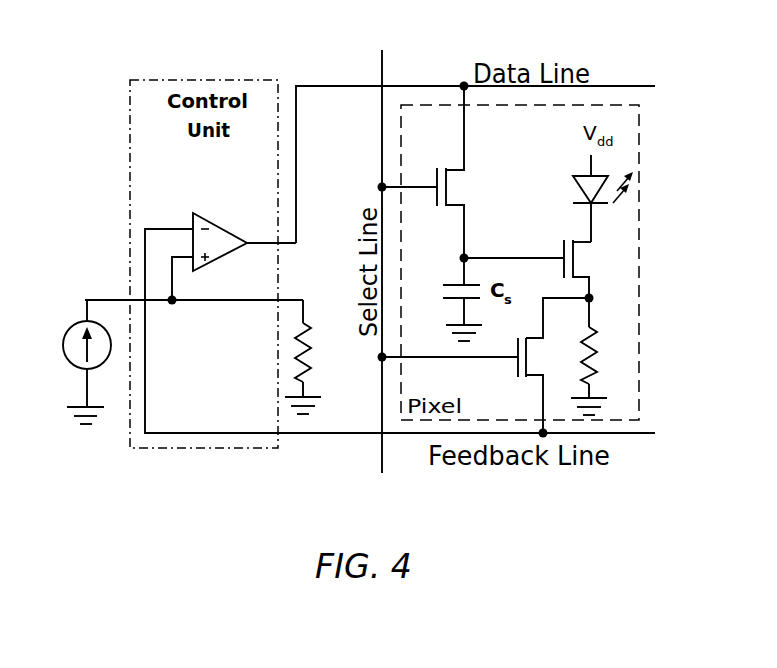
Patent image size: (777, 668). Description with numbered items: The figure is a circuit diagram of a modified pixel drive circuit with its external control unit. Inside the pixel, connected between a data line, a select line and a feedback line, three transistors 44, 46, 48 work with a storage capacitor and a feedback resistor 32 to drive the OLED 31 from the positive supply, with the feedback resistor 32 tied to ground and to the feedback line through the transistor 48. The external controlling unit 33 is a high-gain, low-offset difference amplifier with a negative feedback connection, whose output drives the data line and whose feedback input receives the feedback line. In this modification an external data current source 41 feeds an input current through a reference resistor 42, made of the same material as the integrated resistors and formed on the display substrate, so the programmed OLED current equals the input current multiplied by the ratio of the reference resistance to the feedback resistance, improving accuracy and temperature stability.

The OLED 31 is at (588, 187).
The feedback resistor 32 is at (593, 343).
The external controlling unit 33 is at (198, 213).
The external data current source 41 is at (66, 355).
The reference resistor 42 is at (300, 357).
The switching transistor 44 is at (472, 193).
The driving transistor 46 is at (582, 262).
The feedback transistor 48 is at (542, 353).